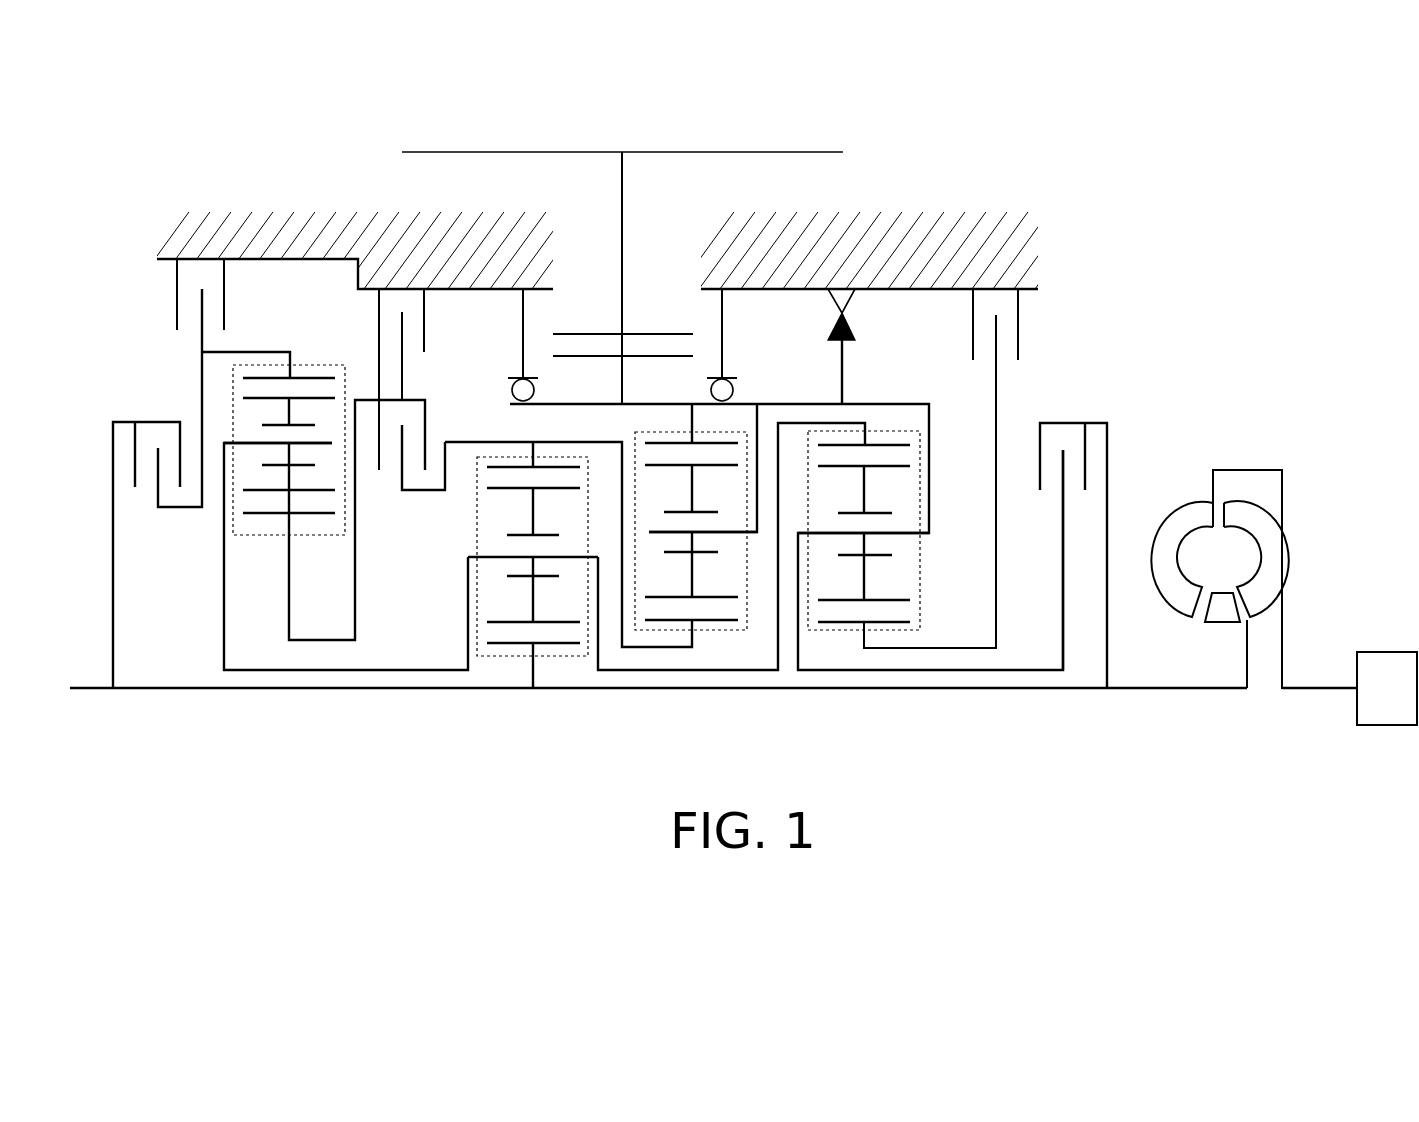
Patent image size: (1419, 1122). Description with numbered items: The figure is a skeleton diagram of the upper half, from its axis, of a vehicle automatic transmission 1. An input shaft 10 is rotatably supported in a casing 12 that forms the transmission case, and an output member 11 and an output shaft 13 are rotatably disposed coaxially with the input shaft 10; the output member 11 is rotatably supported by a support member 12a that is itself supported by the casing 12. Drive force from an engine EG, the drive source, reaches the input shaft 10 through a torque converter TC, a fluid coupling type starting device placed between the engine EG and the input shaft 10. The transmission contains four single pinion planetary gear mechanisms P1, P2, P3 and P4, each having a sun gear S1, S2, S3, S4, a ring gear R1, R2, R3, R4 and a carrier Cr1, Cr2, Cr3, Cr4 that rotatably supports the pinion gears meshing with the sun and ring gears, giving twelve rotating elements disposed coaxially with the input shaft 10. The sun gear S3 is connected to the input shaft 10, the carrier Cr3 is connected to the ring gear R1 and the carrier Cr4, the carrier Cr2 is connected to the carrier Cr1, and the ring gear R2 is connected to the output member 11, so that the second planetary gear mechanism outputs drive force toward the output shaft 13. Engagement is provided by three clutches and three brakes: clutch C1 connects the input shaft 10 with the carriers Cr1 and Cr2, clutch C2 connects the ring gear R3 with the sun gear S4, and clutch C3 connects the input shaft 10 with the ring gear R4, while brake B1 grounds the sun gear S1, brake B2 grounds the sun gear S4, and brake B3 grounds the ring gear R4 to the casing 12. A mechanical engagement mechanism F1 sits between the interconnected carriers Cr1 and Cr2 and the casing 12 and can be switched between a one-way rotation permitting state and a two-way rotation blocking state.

The automatic transmission 1 is at (1105, 198).
The input shaft 10 is at (1003, 690).
The output member 11 is at (624, 378).
The casing 12 is at (463, 212).
The support member 12a is at (522, 325).
The output shaft 13 is at (586, 151).
The brake B1 is at (1042, 321).
The brake B2 is at (364, 305).
The brake B3 is at (166, 291).
The clutch C1 is at (1102, 420).
The clutch C2 is at (436, 437).
The clutch C3 is at (152, 530).
The mechanical engagement mechanism F1 is at (857, 321).
The ring gear R1 is at (900, 445).
The ring gear R2 is at (733, 443).
The ring gear R3 is at (490, 467).
The ring gear R4 is at (312, 378).
The carrier Cr1 is at (880, 535).
The carrier Cr2 is at (727, 535).
The carrier Cr3 is at (478, 556).
The carrier Cr4 is at (327, 442).
The planetary gear mechanism P1 is at (920, 590).
The planetary gear mechanism P2 is at (742, 632).
The planetary gear mechanism P3 is at (500, 658).
The planetary gear mechanism P4 is at (268, 537).
The sun gear S1 is at (893, 625).
The sun gear S2 is at (717, 622).
The sun gear S3 is at (568, 643).
The sun gear S4 is at (322, 515).
The torque converter TC is at (1191, 505).
The engine EG is at (1387, 688).